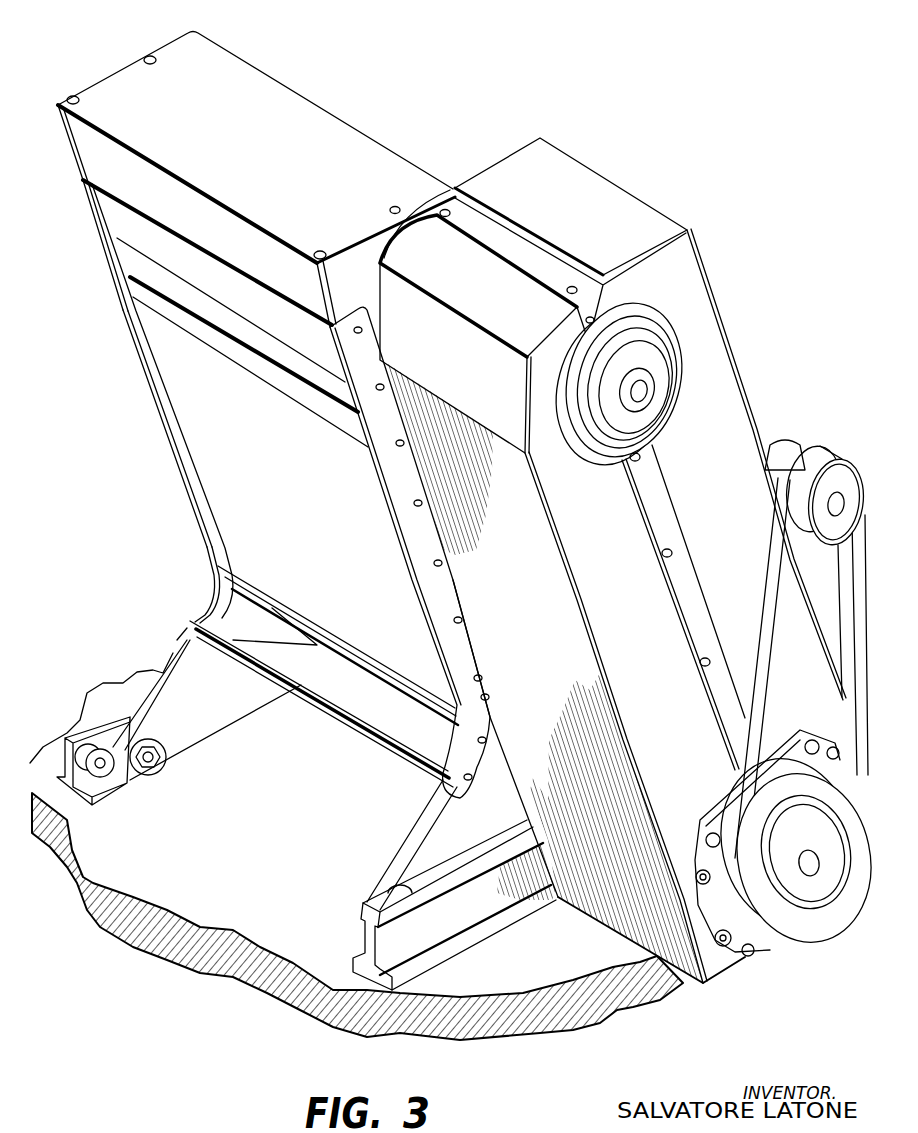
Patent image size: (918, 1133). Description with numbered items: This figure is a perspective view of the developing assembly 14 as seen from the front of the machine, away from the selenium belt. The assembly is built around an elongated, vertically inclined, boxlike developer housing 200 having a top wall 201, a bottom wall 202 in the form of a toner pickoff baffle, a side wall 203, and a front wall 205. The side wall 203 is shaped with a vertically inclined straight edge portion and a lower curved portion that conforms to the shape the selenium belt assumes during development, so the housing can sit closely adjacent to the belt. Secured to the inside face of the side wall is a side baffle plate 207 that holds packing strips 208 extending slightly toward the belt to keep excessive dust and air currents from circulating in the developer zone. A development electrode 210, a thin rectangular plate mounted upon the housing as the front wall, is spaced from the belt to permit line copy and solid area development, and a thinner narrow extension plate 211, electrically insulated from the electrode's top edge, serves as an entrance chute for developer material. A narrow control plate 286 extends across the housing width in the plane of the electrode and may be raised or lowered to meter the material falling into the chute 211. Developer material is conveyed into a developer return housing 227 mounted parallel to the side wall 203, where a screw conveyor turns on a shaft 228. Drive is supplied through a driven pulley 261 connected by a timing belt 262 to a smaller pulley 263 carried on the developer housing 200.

The developing assembly 14 is at (712, 190).
The developer housing 200 is at (137, 341).
The top wall 201 is at (165, 55).
The bottom wall 202 is at (377, 683).
The side wall 203 is at (343, 260).
The front wall 205 is at (203, 488).
The side baffle plate 207 is at (430, 592).
The packing strips 208 is at (173, 426).
The development electrode 210 is at (230, 527).
The extension plate 211 is at (130, 257).
The developer return housing 227 is at (728, 350).
The shaft 228 is at (813, 860).
The driven pulley 261 is at (813, 918).
The timing belt 262 is at (783, 580).
The smaller pulley 263 is at (857, 484).
The control plate 286 is at (103, 214).